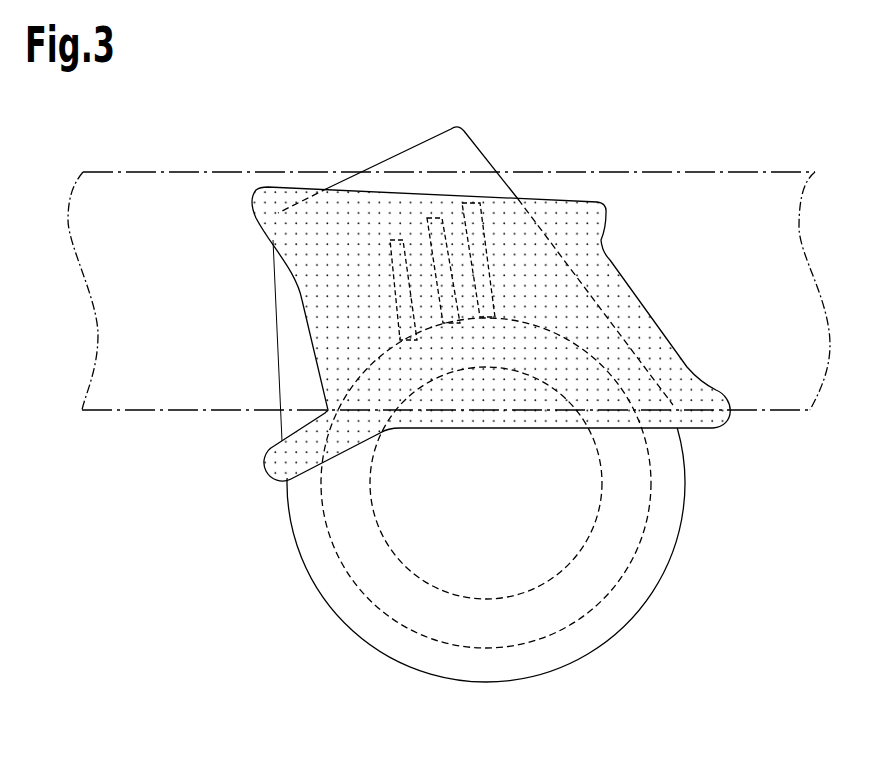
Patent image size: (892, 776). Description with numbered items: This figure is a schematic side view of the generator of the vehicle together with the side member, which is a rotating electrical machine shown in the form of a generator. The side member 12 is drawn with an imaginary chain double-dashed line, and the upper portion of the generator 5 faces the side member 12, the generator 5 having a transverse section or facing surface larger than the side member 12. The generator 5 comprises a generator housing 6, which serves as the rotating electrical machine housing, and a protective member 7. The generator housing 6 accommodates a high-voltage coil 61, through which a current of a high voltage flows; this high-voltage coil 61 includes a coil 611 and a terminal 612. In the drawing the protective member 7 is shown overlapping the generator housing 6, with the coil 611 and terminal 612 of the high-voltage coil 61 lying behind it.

The generator 5 is at (607, 110).
The generator housing 6 is at (496, 141).
The protective member 7 is at (550, 200).
The side member 12 is at (682, 170).
The high-voltage coil 61 is at (348, 371).
The coil 611 is at (347, 528).
The terminal 612 is at (392, 287).